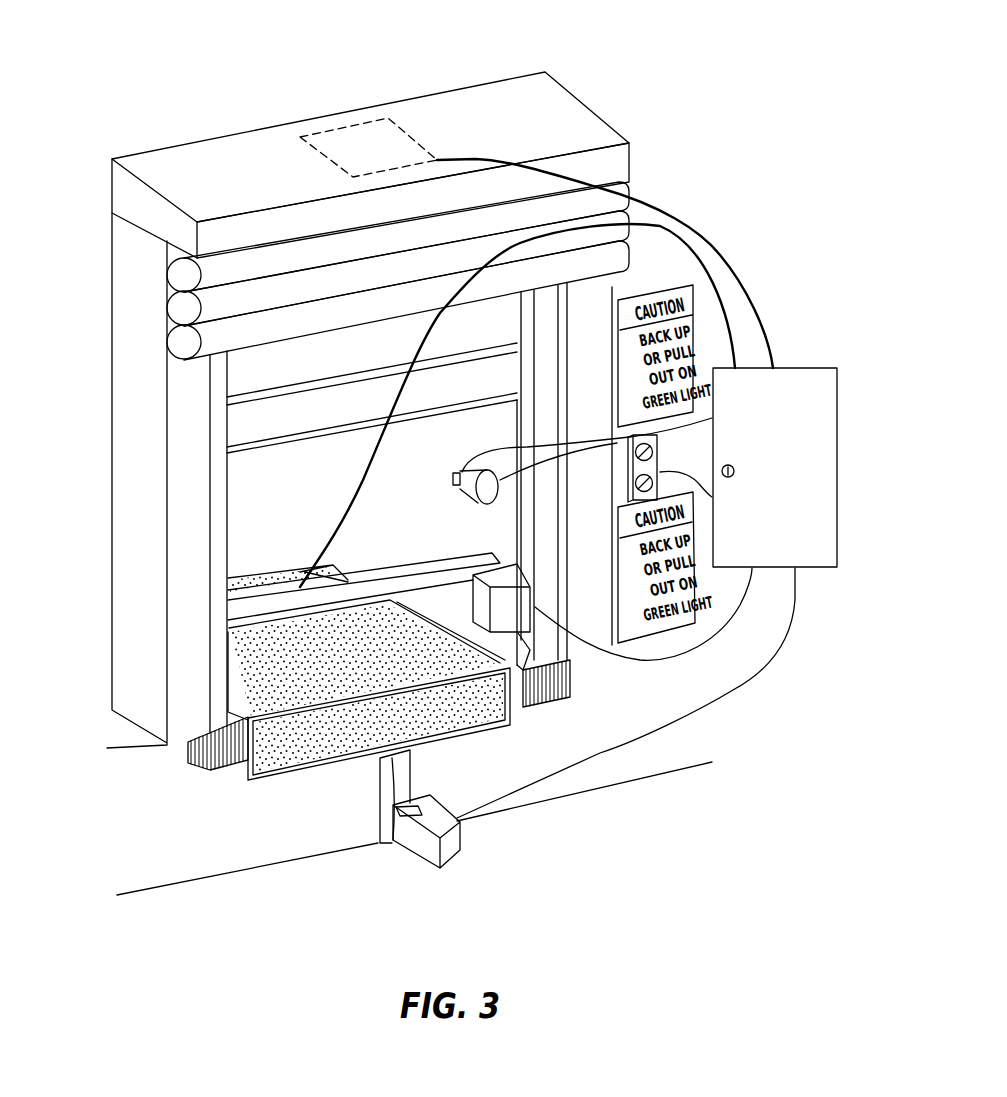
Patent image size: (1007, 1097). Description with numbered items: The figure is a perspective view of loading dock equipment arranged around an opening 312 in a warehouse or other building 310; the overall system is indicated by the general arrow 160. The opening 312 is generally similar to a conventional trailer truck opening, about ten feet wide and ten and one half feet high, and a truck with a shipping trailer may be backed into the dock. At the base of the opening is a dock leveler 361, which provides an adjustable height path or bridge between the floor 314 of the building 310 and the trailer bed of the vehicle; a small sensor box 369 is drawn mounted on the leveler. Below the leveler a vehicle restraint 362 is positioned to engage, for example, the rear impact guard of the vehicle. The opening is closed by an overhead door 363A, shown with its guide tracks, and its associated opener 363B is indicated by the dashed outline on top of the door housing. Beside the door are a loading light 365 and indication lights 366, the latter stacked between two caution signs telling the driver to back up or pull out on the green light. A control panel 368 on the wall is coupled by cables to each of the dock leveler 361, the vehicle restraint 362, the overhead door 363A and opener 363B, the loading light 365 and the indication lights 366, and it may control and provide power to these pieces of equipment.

The loading dock safety system 160 is at (643, 68).
The building 310 is at (123, 342).
The opening 312 is at (247, 511).
The floor 314 is at (343, 572).
The dock leveler 361 is at (257, 598).
The vehicle restraint 362 is at (413, 843).
The overhead door 363A is at (253, 443).
The opener 363B is at (405, 127).
The loading light 365 is at (463, 500).
The indication lights 366 is at (631, 494).
The control panel 368 is at (812, 367).
The leveler sensor 369 is at (478, 607).